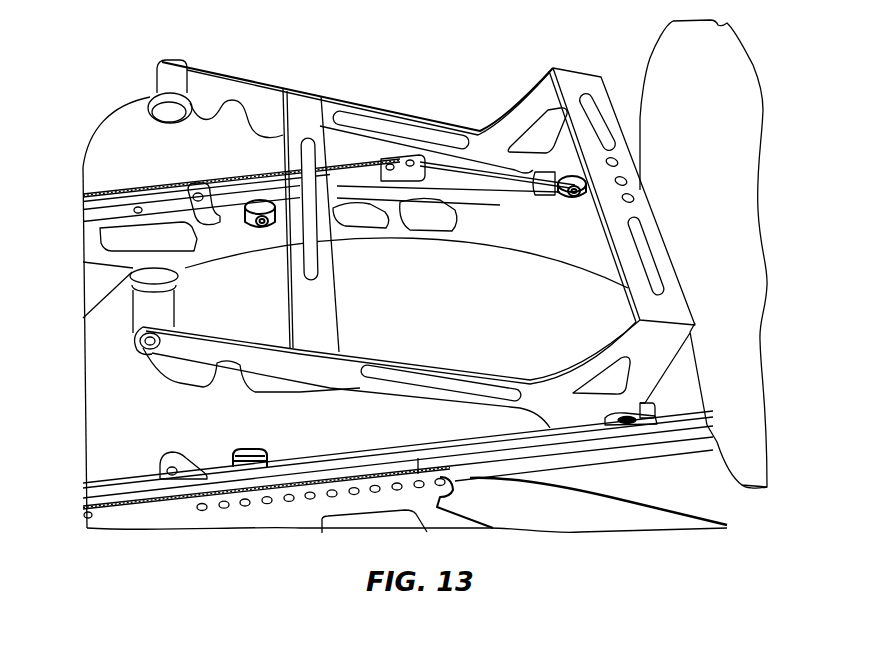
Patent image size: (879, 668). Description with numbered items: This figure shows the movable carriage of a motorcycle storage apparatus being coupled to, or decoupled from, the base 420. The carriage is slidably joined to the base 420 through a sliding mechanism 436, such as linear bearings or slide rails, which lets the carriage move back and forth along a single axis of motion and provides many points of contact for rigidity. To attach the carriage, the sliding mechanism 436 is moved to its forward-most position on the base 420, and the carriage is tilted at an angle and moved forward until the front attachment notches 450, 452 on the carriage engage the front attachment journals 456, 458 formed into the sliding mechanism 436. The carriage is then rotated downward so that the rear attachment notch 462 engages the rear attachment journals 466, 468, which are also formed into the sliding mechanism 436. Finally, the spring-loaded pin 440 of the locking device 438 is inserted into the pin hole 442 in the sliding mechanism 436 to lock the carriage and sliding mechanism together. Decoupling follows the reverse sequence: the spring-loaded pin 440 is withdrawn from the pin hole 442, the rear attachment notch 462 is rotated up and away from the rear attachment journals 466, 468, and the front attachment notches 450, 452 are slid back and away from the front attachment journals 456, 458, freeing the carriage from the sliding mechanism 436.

The base 420 is at (284, 512).
The sliding mechanism 436 is at (572, 450).
The locking device 438 is at (143, 307).
The spring-loaded pin 440 is at (135, 340).
The pin hole 442 is at (160, 471).
The front attachment notch 450 is at (607, 424).
The front attachment notch 452 is at (535, 175).
The front attachment journal 456 is at (700, 418).
The front attachment journal 458 is at (568, 200).
The rear attachment notch 462 is at (300, 395).
The rear attachment journal 466 is at (243, 456).
The rear attachment journal 468 is at (214, 183).